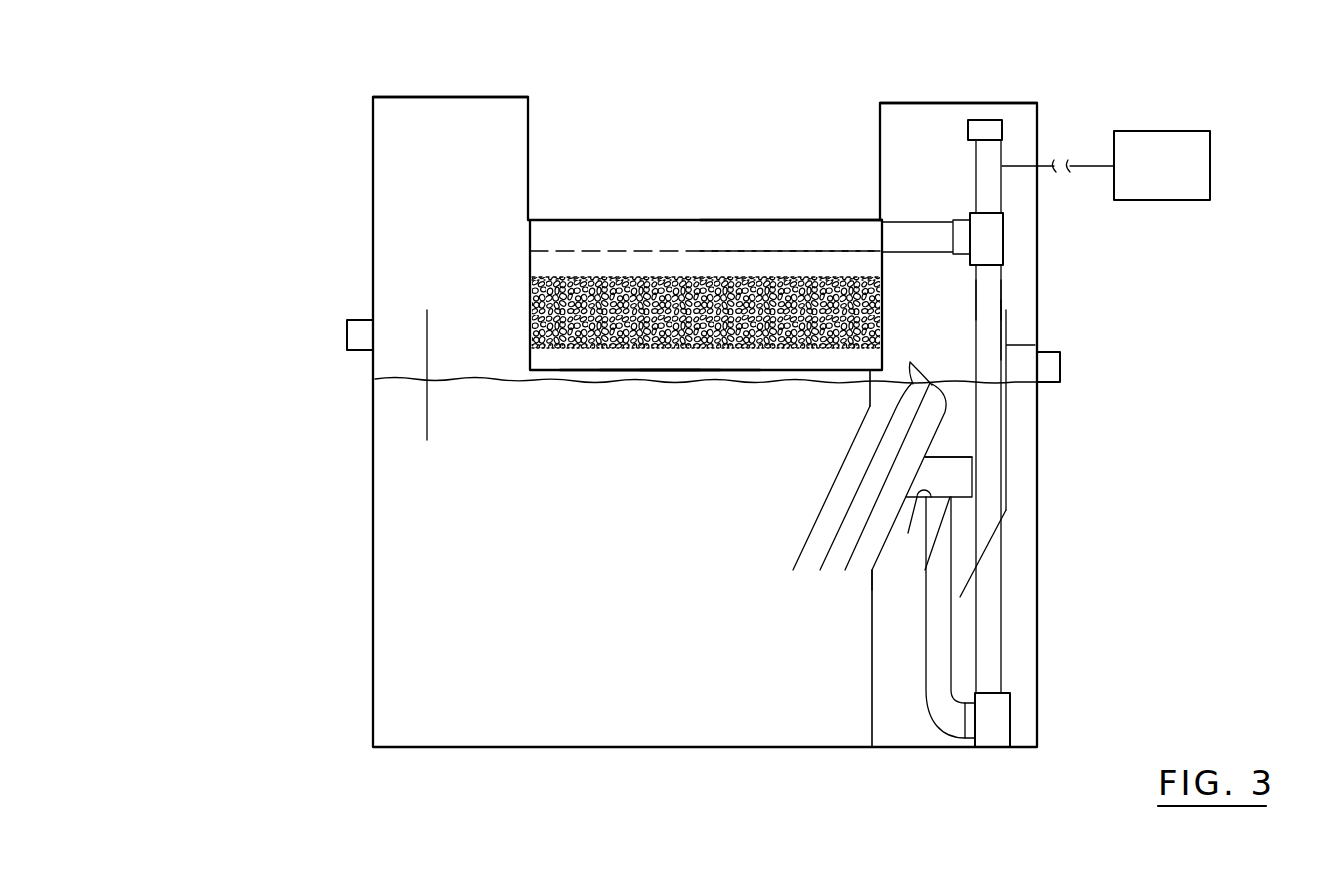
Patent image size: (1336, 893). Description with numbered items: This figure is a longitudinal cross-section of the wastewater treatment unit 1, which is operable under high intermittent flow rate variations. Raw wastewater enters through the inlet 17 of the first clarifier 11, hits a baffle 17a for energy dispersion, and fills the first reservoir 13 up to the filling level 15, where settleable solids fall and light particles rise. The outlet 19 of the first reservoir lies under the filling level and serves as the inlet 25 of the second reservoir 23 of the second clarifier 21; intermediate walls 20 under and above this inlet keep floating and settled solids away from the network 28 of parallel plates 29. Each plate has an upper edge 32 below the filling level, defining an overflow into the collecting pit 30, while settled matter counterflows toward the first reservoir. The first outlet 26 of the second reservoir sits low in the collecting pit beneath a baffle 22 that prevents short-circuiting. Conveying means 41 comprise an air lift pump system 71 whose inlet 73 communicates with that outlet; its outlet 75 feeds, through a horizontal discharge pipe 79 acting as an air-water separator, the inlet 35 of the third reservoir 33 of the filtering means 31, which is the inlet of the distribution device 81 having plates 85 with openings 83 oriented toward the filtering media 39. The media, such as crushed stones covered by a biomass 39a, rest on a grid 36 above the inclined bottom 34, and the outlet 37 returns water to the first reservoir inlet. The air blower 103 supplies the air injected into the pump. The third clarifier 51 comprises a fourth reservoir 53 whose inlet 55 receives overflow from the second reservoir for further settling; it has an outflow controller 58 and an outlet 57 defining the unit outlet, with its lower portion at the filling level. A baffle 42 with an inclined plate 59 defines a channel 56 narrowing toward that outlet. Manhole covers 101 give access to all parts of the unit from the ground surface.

The wastewater treatment unit 1 is at (290, 157).
The first clarifier 11 is at (671, 422).
The first reservoir 13 is at (379, 541).
The filling level 15 is at (483, 378).
The inlet 17 is at (364, 333).
The baffle 17a is at (427, 316).
The outlet 19 is at (843, 502).
The intermediate walls 20 is at (868, 392).
The second clarifier 21 is at (827, 535).
The baffle 22 is at (972, 458).
The second reservoir 23 is at (843, 483).
The inlet 25 is at (843, 502).
The first outlet 26 is at (918, 506).
The network of parallel plates 28 is at (886, 420).
The parallel plates 29 is at (904, 435).
The collecting pit 30 is at (957, 442).
The filtering means 31 is at (673, 298).
The upper edge 32 is at (833, 278).
The third reservoir 33 is at (650, 219).
The bottom 34 is at (648, 362).
The inlet 35 is at (884, 233).
The grid 36 is at (692, 350).
The outlet 37 is at (607, 355).
The filtering media 39 is at (575, 283).
The biomass 39a is at (548, 272).
The conveying means 41 is at (1002, 292).
The baffle 42 is at (1008, 330).
The third clarifier 51 is at (1012, 593).
The fourth reservoir 53 is at (1040, 638).
The inlet 55 is at (975, 373).
The channel 56 is at (1030, 492).
The outlet 57 is at (1050, 383).
The outflow controller 58 is at (1060, 360).
The plate 59 is at (1008, 565).
The air lift pump system 71 is at (978, 332).
The inlet 73 is at (928, 558).
The outlet 75 is at (882, 247).
The horizontal discharge pipe 79 is at (913, 233).
The distribution device 81 is at (740, 232).
The openings 83 is at (740, 252).
The plates 85 is at (767, 246).
The manhole covers 101 is at (453, 97).
The air blower 103 is at (1106, 165).